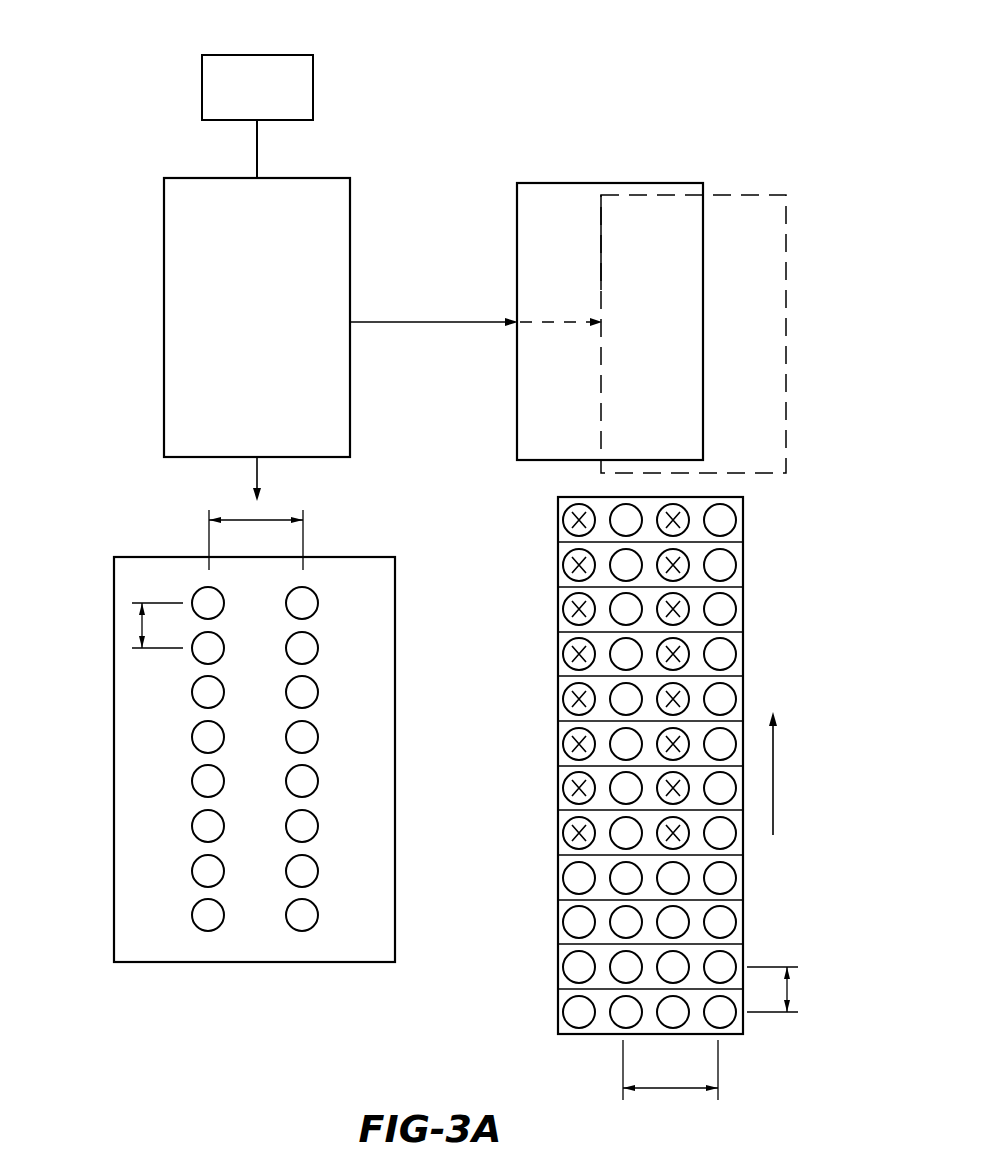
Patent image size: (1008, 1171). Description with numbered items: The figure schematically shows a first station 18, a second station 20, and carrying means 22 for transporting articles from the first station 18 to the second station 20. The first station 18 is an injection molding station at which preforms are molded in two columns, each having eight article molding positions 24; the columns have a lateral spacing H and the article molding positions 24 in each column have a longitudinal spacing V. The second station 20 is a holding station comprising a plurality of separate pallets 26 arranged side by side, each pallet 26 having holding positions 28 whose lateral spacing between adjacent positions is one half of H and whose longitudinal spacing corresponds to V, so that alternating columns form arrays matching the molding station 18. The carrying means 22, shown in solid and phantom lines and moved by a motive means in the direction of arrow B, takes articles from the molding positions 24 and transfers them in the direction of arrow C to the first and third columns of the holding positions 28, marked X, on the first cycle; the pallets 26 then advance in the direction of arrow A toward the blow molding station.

The first station 18 is at (268, 996).
The second station 20 is at (790, 905).
The carrying means 22 is at (146, 365).
The article molding positions 24 is at (300, 833).
The pallets 26 is at (740, 561).
The holding positions 28 is at (630, 613).